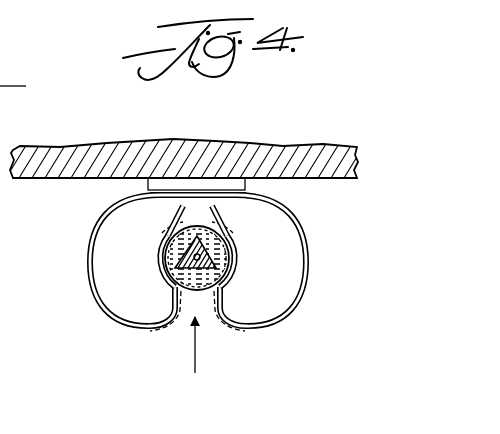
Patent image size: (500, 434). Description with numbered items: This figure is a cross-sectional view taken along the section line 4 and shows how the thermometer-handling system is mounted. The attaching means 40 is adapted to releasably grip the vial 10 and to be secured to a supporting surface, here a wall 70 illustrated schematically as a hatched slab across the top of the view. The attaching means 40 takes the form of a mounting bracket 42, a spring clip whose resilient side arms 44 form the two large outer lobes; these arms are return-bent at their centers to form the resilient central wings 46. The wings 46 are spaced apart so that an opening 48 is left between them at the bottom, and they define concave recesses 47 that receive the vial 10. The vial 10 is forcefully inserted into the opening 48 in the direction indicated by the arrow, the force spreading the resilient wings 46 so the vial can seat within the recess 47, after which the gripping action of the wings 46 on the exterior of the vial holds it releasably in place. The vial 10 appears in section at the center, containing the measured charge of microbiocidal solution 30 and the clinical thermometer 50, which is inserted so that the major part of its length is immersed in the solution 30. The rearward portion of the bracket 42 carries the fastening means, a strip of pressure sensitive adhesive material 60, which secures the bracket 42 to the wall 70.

The section line 4— 4 is at (17, 68).
The vial 10 is at (233, 243).
The microbiocidal solution 30 is at (218, 228).
The attaching means 40 is at (189, 234).
The mounting bracket 42 is at (129, 321).
The resilient side arms 44 is at (34, 129).
The resilient central wings 46 is at (160, 280).
The concave recesses 47 is at (158, 248).
The opening 48 is at (205, 327).
The clinical thermometer 50 is at (215, 272).
The strip of pressure sensitive adhesive material 60 is at (231, 178).
The wall 70 is at (297, 153).